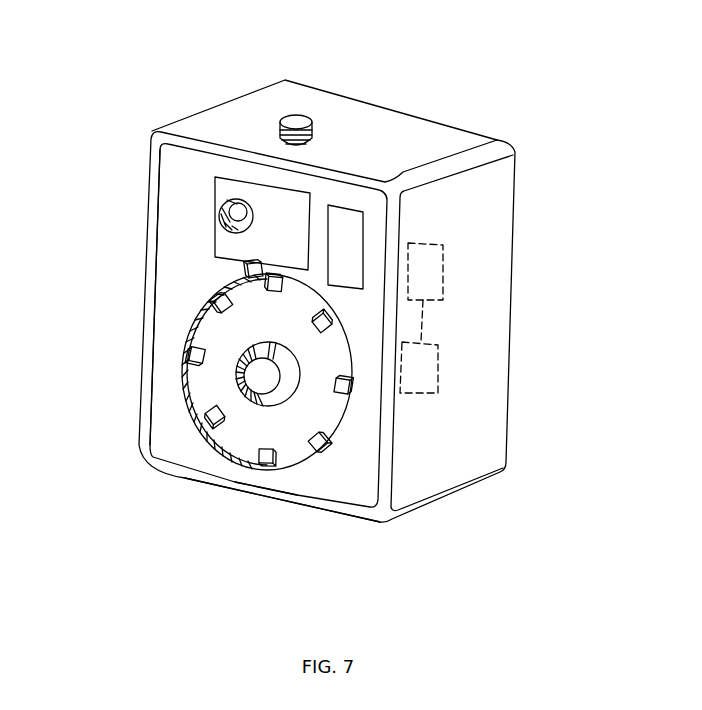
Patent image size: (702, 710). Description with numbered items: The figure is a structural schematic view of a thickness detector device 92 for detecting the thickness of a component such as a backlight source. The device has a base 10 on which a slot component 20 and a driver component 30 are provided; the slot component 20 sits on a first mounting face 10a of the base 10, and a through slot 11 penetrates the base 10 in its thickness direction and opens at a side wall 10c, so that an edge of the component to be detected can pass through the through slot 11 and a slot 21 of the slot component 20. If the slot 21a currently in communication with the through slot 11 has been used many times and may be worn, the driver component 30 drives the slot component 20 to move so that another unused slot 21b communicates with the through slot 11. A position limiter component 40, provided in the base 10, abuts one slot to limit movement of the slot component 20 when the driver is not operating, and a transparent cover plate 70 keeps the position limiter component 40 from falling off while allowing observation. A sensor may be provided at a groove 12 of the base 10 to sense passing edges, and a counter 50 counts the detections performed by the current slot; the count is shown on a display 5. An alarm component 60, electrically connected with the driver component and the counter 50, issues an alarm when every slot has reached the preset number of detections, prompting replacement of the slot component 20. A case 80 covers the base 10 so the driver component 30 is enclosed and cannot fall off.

The thickness detector device 92 is at (158, 52).
The case 80 is at (407, 144).
The position limiter component 40 is at (296, 116).
The display 5 is at (352, 231).
The cover plate 70 is at (229, 243).
The counter 50 is at (433, 270).
The alarm component 60 is at (420, 371).
The driver component 30 is at (259, 378).
The base 10 is at (163, 432).
The first mounting face 10a is at (150, 354).
The side wall 10c is at (207, 484).
The groove 12 is at (205, 360).
The slot component 20 is at (294, 451).
The slot 21 is at (318, 443).
The slot 21a is at (271, 450).
The slot 21b is at (219, 417).
The through slot 11 is at (275, 496).